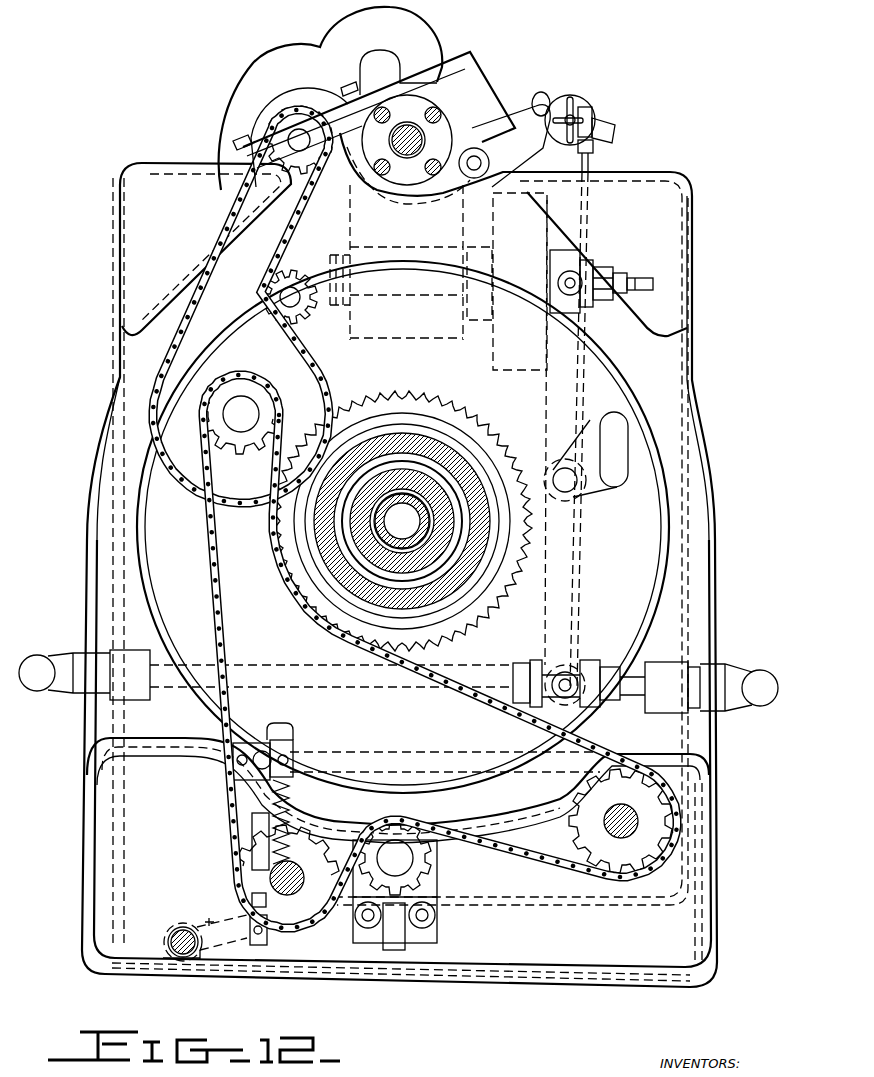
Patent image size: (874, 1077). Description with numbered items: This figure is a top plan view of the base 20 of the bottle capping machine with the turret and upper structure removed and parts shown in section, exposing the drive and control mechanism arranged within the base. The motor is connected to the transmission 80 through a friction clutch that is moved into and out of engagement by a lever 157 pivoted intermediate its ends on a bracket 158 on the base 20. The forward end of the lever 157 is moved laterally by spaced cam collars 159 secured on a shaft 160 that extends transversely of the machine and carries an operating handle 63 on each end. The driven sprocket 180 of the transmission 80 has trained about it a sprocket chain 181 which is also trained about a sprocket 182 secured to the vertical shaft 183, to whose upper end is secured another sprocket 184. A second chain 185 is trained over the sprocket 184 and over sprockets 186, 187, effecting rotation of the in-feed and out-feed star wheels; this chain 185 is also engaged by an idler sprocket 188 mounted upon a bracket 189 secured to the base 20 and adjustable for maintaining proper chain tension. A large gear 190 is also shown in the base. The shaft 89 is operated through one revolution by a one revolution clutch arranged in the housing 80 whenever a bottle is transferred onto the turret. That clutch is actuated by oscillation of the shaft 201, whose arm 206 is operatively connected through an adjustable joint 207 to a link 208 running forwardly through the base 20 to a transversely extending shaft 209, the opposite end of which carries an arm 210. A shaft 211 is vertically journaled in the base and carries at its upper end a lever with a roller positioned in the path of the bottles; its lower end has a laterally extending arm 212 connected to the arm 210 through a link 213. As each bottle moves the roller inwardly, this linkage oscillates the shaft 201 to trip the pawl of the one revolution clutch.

The base 20 is at (694, 238).
The operating handle 63 is at (38, 660).
The transmission 80 is at (424, 36).
The shaft 89 is at (408, 128).
The lever 157 is at (548, 400).
The bracket 158 is at (582, 490).
The cam collars 159 is at (520, 665).
The shaft 160 is at (354, 692).
The driven sprocket 180 is at (308, 200).
The sprocket chain 181 is at (221, 236).
The sprocket 182 is at (312, 378).
The vertical shaft 183 is at (245, 405).
The sprocket 184 is at (241, 455).
The second chain 185 is at (225, 588).
The sprocket 186 is at (572, 827).
The sprocket 187 is at (315, 830).
The idler sprocket 188 is at (435, 857).
The bracket 189 is at (437, 888).
The gear 190 is at (420, 393).
The shaft 201 is at (472, 154).
The arm 206 is at (490, 128).
The adjustable joint 207 is at (580, 108).
The link 208 is at (592, 158).
The shaft 209 is at (405, 756).
The arm 210 is at (293, 742).
The shaft 211 is at (168, 942).
The arm 212 is at (240, 918).
The link 213 is at (240, 836).